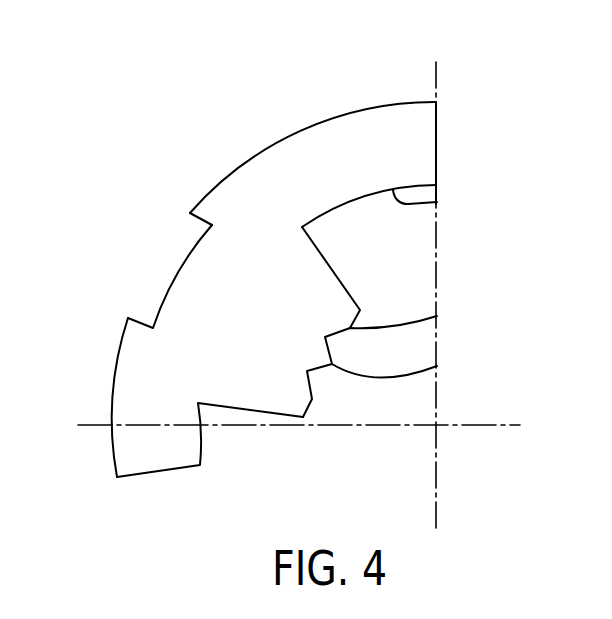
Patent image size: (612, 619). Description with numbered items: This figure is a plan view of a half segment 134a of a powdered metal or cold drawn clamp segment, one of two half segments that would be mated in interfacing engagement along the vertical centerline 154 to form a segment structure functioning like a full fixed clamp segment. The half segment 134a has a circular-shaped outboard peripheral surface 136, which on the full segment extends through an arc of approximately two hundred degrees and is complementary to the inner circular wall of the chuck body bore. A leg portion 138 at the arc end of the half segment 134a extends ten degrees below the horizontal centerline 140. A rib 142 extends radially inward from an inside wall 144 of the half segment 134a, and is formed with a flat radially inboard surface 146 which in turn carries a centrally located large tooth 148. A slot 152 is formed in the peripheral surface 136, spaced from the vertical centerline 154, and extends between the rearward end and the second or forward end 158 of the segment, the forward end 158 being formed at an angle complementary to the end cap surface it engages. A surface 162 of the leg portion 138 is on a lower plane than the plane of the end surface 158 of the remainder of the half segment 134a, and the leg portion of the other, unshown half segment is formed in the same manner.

The half segment 134a is at (493, 90).
The outboard peripheral surface 136 is at (367, 105).
The leg portion 138 is at (110, 453).
The horizontal centerline 140 is at (488, 425).
The rib 142 is at (310, 288).
The inside wall 144 is at (437, 202).
The flat radially inboard surface 146 is at (437, 317).
The large tooth 148 is at (437, 365).
The slot 152 is at (180, 290).
The vertical centerline 154 is at (437, 460).
The second or forward end 158 is at (277, 242).
The surface of the leg portion 162 is at (193, 455).